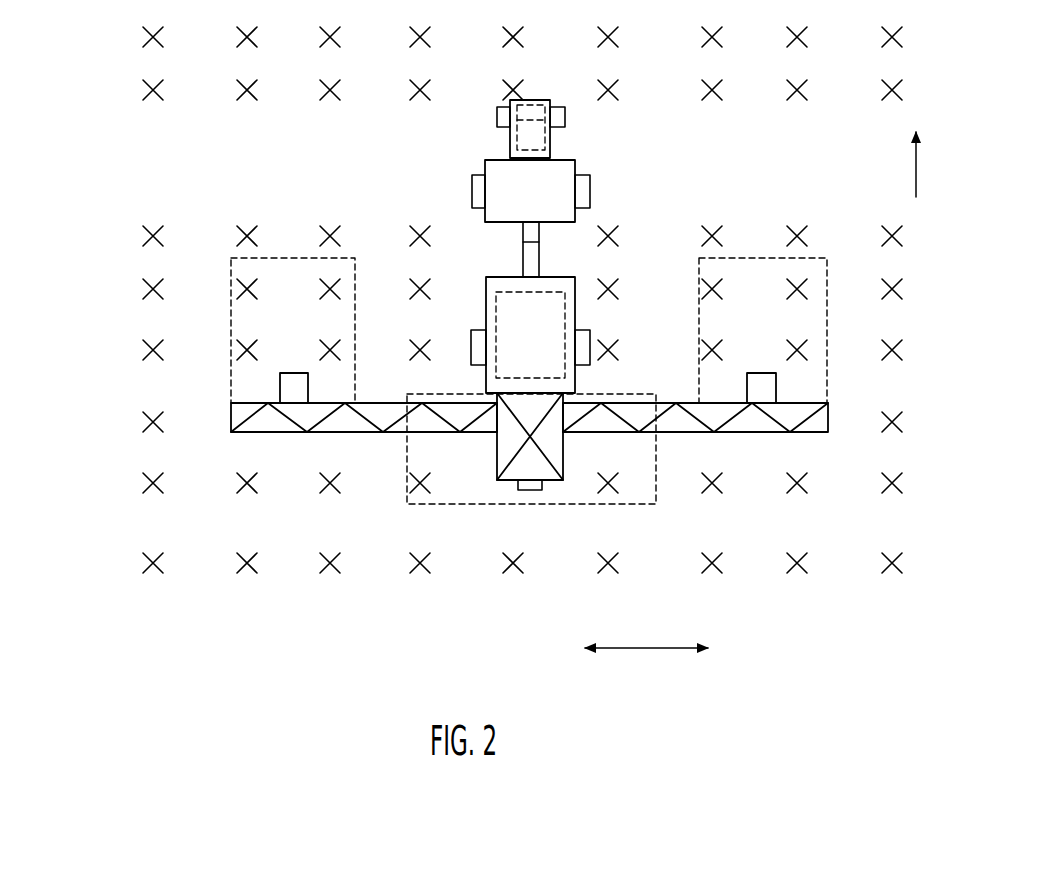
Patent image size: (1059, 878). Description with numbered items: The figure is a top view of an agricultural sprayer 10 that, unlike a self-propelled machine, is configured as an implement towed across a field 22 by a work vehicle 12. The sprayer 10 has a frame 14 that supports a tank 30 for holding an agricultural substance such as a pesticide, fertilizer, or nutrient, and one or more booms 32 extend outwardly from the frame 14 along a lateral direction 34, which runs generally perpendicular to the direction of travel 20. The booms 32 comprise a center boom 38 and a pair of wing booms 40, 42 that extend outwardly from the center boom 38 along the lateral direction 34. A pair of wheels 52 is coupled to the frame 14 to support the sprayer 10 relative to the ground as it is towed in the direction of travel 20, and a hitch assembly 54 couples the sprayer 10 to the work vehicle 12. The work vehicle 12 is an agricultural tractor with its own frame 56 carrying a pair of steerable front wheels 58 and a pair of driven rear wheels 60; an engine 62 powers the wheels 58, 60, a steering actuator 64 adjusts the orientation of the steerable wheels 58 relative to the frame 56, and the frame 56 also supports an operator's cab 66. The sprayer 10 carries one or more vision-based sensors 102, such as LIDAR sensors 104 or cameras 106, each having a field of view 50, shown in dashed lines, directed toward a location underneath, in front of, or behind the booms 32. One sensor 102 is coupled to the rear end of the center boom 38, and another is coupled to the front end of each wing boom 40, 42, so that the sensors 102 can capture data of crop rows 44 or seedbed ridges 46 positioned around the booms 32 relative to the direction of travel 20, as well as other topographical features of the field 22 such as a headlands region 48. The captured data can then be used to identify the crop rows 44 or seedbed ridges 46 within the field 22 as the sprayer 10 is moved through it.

The agricultural sprayer 10 is at (477, 268).
The work vehicle 12 is at (464, 165).
The frame 14 is at (578, 305).
The direction of travel 20 is at (918, 178).
The field 22 is at (87, 277).
The tank 30 is at (517, 277).
The booms 32 is at (496, 437).
The lateral direction 34 is at (642, 651).
The center boom 38 is at (497, 445).
The wing boom 40 is at (231, 428).
The wing boom 42 is at (721, 434).
The crop rows 44 is at (473, 352).
The seedbed ridges 46 is at (147, 616).
The headlands region 48 is at (782, 163).
The field of view 50 is at (290, 258).
The wheels 52 is at (471, 347).
The hitch assembly 54 is at (540, 237).
The frame 56 is at (551, 150).
The steerable front wheels 58 is at (497, 117).
The driven rear wheels 60 is at (471, 200).
The engine 62 is at (510, 150).
The steering actuator 64 is at (548, 100).
The operator's cab 66 is at (565, 175).
The vision-based sensor 102 is at (289, 368).
The LIDAR sensor 104 is at (534, 425).
The camera 106 is at (308, 391).